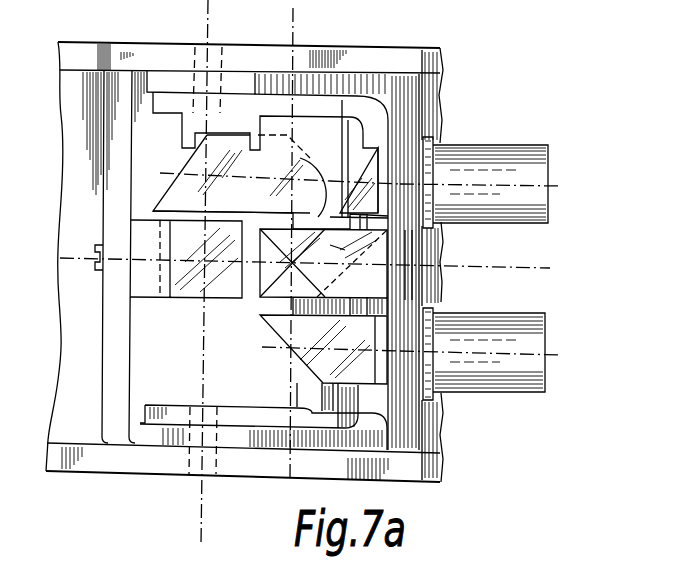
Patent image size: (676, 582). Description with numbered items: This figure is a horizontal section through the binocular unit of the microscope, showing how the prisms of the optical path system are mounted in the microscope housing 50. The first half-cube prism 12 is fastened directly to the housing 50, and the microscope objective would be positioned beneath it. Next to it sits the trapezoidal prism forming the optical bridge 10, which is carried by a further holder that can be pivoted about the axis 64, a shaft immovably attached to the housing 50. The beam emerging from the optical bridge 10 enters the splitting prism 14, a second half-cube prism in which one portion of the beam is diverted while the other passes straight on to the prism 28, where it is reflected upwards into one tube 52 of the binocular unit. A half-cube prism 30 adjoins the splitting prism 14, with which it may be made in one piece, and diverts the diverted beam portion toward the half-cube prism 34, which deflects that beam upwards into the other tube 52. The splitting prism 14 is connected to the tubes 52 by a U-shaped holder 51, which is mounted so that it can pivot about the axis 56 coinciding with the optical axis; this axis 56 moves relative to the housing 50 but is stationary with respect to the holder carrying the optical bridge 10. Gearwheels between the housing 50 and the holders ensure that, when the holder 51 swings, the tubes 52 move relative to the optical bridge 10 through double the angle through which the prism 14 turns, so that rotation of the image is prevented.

The optical bridge 10 is at (261, 205).
The first half-cube prism 12 is at (182, 288).
The splitting prism 14 is at (270, 272).
The prism 28 is at (304, 327).
The half-cube prism 30 is at (347, 252).
The half-cube prism 34 is at (333, 205).
The microscope housing 50 is at (119, 70).
The U-shaped holder 51 is at (407, 253).
The tubes 52 is at (495, 162).
The axis 56 is at (293, 22).
The axis 64 is at (202, 63).